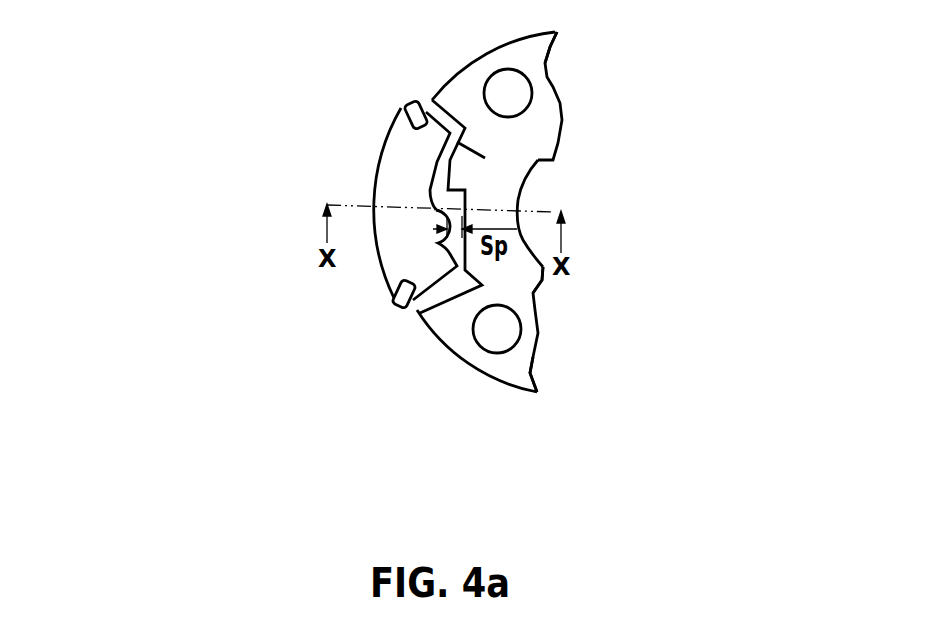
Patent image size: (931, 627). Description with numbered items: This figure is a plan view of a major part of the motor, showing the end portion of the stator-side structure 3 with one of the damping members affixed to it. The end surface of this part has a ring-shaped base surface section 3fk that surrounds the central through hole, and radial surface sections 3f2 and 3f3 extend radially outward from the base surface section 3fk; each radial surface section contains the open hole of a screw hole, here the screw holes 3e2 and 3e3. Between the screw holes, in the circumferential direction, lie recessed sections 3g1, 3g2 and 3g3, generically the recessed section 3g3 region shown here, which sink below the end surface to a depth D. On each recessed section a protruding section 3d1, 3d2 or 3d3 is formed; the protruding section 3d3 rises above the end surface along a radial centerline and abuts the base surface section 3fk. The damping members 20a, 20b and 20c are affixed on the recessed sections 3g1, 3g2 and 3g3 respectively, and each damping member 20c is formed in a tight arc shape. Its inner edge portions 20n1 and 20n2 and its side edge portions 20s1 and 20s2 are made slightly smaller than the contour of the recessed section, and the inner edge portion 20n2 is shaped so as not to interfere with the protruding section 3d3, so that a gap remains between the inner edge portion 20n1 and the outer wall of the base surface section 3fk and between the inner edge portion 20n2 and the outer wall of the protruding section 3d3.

The motor stator-side structure 3 is at (607, 207).
The radial surface section 3f3 is at (548, 48).
The screw hole 3e3 is at (508, 92).
The recessed section 3g3 is at (584, 206).
The recessed section 3g1 is at (452, 206).
The recessed section 3g2 is at (455, 141).
The protruding section 3d3 is at (603, 213).
The protruding section 3d1 is at (530, 213).
The protruding section 3d2 is at (530, 213).
The base surface section 3fk is at (540, 288).
The screw hole 3e2 is at (497, 328).
The radial surface section 3f2 is at (627, 379).
The damping member 20c is at (277, 205).
The damping member 20a is at (357, 206).
The damping member 20b is at (357, 206).
The side edge portion 20s2 is at (395, 104).
The inner edge portion 20n2 is at (445, 162).
The inner edge portion 20n1 is at (357, 256).
The side edge portion 20s1 is at (392, 292).